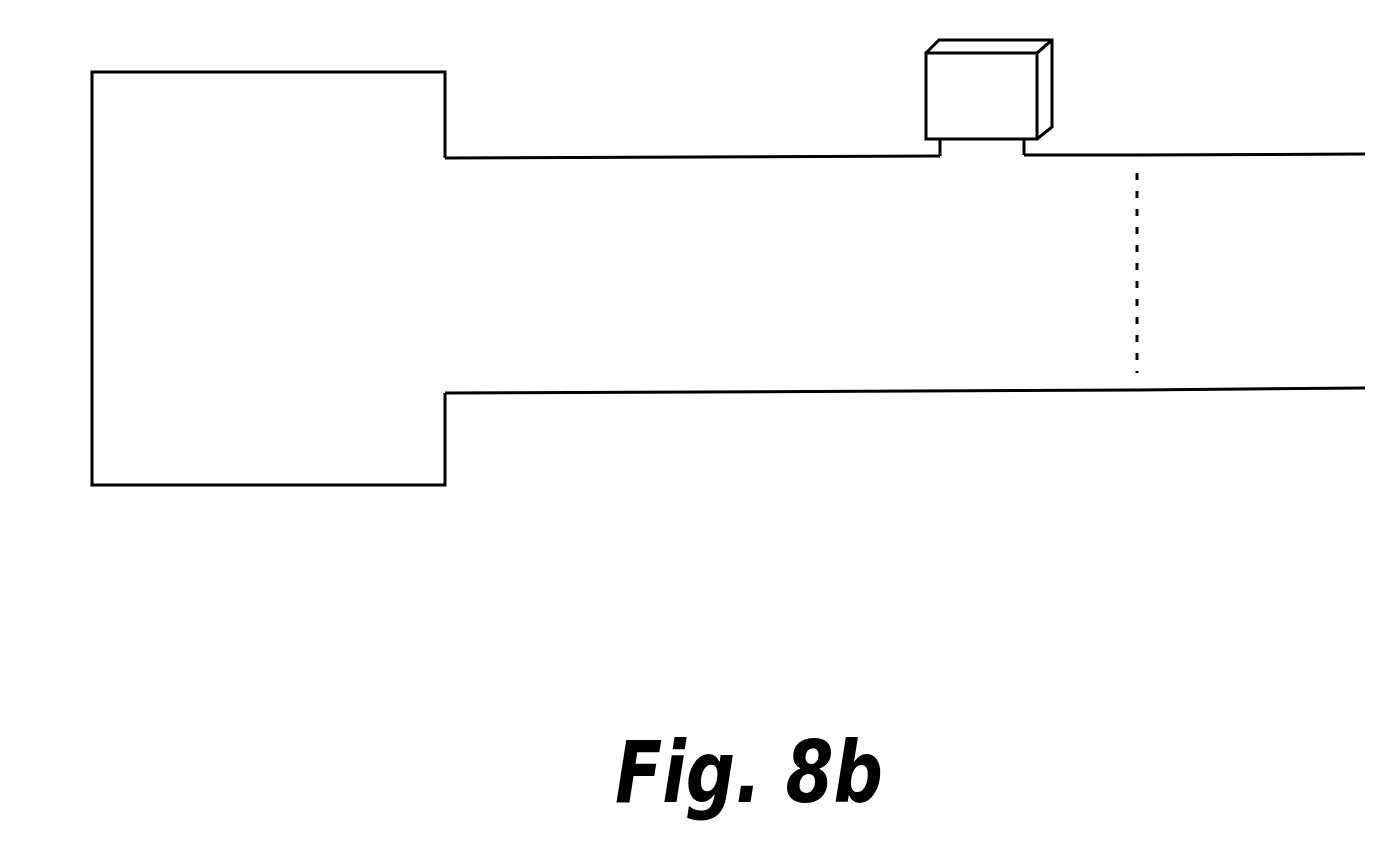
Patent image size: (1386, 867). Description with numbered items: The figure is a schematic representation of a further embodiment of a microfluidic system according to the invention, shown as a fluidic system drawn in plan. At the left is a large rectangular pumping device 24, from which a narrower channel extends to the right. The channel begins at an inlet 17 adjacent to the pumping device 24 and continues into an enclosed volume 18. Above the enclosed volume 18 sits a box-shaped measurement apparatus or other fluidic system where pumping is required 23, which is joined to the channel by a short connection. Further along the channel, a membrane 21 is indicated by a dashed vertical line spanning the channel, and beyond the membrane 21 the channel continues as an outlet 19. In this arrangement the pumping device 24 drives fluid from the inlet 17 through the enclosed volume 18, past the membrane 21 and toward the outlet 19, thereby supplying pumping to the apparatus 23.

The inlet 17 is at (572, 275).
The enclosed volume 18 is at (918, 273).
The outlet 19 is at (1251, 272).
The membrane 21 is at (1137, 155).
The measurement apparatus or other fluidic system where pumping is required 23 is at (989, 98).
The pumping device 24 is at (268, 278).